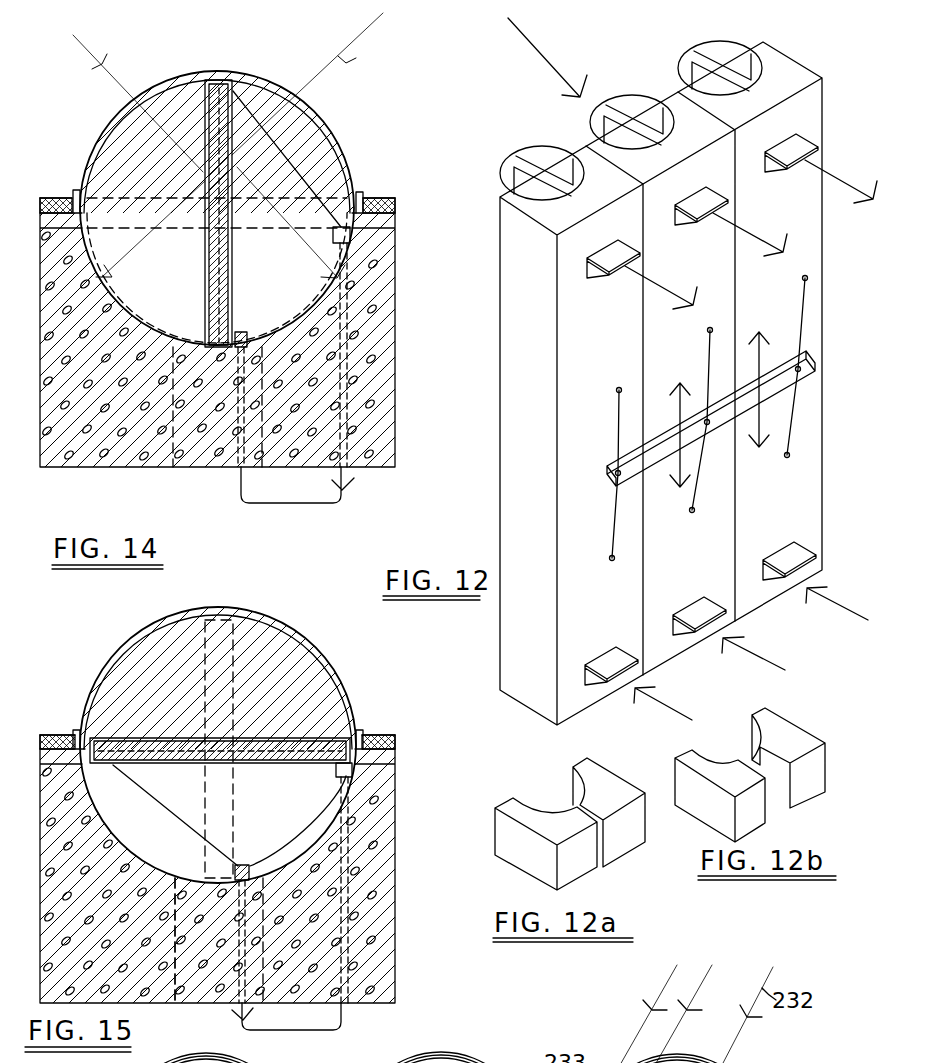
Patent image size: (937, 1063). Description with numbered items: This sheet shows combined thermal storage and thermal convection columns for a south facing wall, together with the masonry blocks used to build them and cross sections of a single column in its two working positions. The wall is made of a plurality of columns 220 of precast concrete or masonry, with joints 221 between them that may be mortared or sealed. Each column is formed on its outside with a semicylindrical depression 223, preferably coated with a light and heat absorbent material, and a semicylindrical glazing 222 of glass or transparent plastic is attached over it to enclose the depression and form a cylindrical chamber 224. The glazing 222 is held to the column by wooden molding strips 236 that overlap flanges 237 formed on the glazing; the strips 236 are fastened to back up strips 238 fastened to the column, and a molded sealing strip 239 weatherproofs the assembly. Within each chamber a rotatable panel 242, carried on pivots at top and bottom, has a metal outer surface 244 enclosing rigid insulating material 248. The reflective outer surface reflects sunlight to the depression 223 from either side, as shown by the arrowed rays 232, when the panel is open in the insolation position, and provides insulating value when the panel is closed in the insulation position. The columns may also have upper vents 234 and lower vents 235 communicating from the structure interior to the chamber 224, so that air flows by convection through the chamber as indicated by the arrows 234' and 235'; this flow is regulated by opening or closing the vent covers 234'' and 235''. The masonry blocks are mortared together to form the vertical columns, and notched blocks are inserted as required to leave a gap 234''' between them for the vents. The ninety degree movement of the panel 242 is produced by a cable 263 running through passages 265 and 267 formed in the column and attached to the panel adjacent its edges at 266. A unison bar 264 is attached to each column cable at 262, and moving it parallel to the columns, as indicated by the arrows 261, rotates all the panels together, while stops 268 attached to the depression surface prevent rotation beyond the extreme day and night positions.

In FIG. 12, the column 220 is at (517, 423).
In FIG. 12, the joint 221 is at (738, 508).
In FIG. 12, the semicylindrical glazing 222 is at (707, 41).
In FIG. 12, the semicylindrical depression 223 is at (763, 70).
In FIG. 12, the cylindrical chamber 224 is at (540, 157).
In FIG. 14, the arrowed rays 232 is at (83, 46).
In FIG. 15, the upper vent 234 is at (166, 961).
In FIG. 12, the upper vent 234 is at (634, 279).
In FIG. 12, the arrow 234' is at (766, 209).
In FIG. 12, the vent cover 234'' is at (681, 224).
In FIG. 12b, the gap 234''' is at (793, 779).
In FIG. 12, the lower vent 235 is at (624, 677).
In FIG. 12, the arrow 235' is at (765, 622).
In FIG. 12, the vent cover 235'' is at (699, 633).
In FIG. 14, the wooden molding strip 236 is at (387, 197).
In FIG. 15, the wooden molding strip 236 is at (385, 733).
In FIG. 14, the flange 237 is at (365, 215).
In FIG. 14, the back up strip 238 is at (392, 218).
In FIG. 15, the back up strip 238 is at (392, 755).
In FIG. 14, the molded sealing strip 239 is at (358, 197).
In FIG. 15, the molded sealing strip 239 is at (360, 733).
In FIG. 14, the rotatable panel 242 is at (217, 100).
In FIG. 12, the rotatable panel 242 is at (618, 108).
In FIG. 14, the outer surface 244 is at (237, 276).
In FIG. 15, the outer surface 244 is at (258, 735).
In FIG. 14, the rigid insulating material 248 is at (230, 257).
In FIG. 15, the rigid insulating material 248 is at (112, 763).
In FIG. 12, the arrows 261 is at (677, 465).
In FIG. 12, the attachment point 262 is at (607, 478).
In FIG. 14, the cable 263 is at (292, 506).
In FIG. 15, the cable 263 is at (314, 1032).
In FIG. 12, the cable 263 is at (617, 428).
In FIG. 12, the unison bar 264 is at (780, 380).
In FIG. 14, the passage 265 is at (233, 427).
In FIG. 15, the passage 265 is at (236, 973).
In FIG. 12, the passage 265 is at (611, 560).
In FIG. 14, the cable attachment 266 is at (233, 90).
In FIG. 15, the cable attachment 266 is at (117, 766).
In FIG. 14, the passage 267 is at (348, 352).
In FIG. 15, the passage 267 is at (348, 916).
In FIG. 12, the passage 267 is at (618, 388).
In FIG. 15, the stop 268 is at (253, 867).